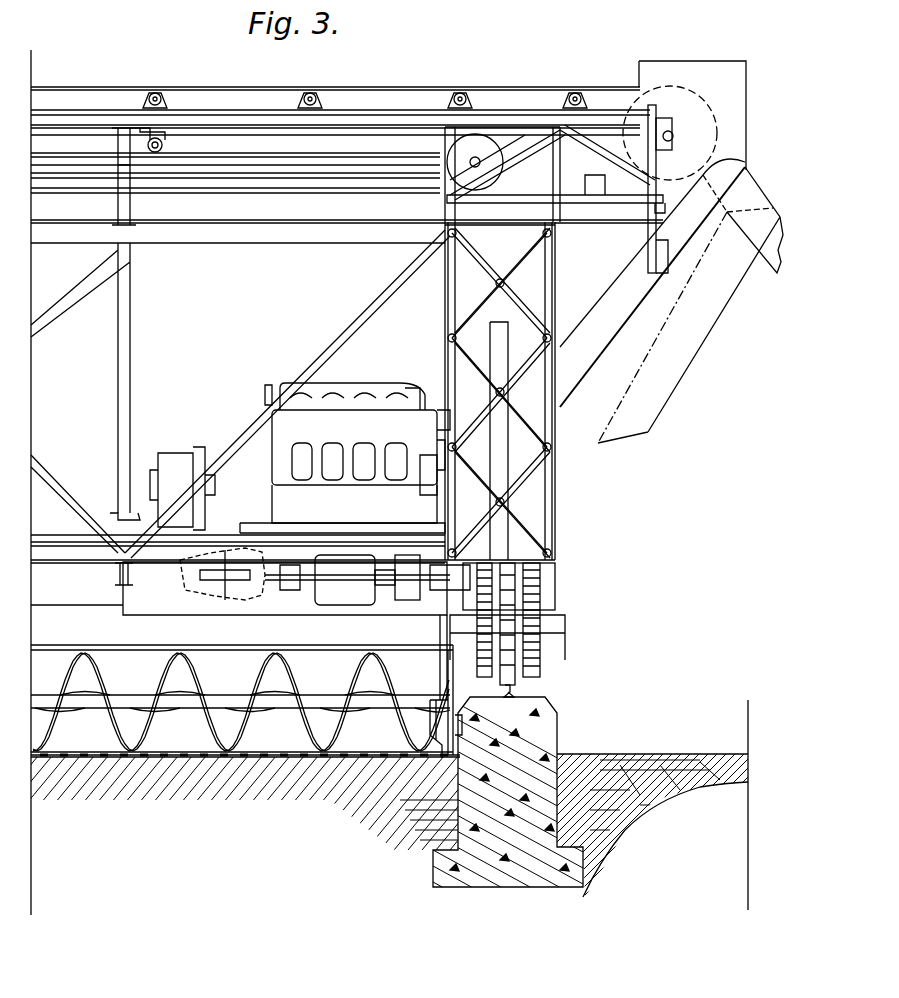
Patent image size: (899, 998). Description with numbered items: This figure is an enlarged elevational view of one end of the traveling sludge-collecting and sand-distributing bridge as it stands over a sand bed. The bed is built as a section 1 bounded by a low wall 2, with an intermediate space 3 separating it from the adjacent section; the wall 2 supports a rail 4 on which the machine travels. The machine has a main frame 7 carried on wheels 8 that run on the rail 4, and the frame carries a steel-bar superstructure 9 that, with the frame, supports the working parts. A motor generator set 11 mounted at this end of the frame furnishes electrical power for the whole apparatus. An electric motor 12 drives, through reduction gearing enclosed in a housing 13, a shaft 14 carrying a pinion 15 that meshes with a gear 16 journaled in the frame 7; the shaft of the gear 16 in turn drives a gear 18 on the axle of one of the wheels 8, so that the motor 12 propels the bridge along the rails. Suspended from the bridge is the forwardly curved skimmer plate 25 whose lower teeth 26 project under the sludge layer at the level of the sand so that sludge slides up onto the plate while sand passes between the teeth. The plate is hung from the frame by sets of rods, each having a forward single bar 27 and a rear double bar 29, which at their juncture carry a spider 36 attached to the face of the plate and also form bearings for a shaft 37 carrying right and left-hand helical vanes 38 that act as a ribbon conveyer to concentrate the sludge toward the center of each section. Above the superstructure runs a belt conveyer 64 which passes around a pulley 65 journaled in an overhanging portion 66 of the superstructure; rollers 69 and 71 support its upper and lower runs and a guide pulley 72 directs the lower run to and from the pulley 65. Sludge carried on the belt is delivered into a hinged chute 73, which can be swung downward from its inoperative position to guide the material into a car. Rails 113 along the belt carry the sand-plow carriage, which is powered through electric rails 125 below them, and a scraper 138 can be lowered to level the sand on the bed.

The sand bed section 1 is at (215, 775).
The low wall 2 is at (560, 731).
The intermediate space 3 is at (690, 754).
The rail 4 is at (515, 691).
The main frame 7 is at (556, 584).
The wheel 8 is at (518, 683).
The superstructure 9 is at (125, 300).
The motor generator set 11 is at (332, 437).
The electric motor 12 is at (224, 590).
The housing 13 is at (312, 600).
The shaft 14 is at (466, 596).
The pinion 15 is at (552, 565).
The gear 16 is at (492, 668).
The gear 18 is at (542, 664).
The forwardly curved plate 25 is at (302, 742).
The teeth 26 is at (188, 755).
The forward single bar 27 is at (425, 650).
The rear double bar 29 is at (440, 662).
The spider 36 is at (440, 735).
The shaft 37 is at (355, 685).
The helical vane 38 is at (172, 666).
The belt conveyer 64 is at (360, 90).
The pulley 65 is at (642, 137).
The overhanging portion 66 is at (620, 195).
The roller 69 is at (162, 98).
The roller 71 is at (163, 145).
The guide pulley 72 is at (490, 185).
The chute 73 is at (748, 195).
The rail 113 is at (95, 118).
The electric rail 125 is at (240, 195).
The scraper 138 is at (97, 605).